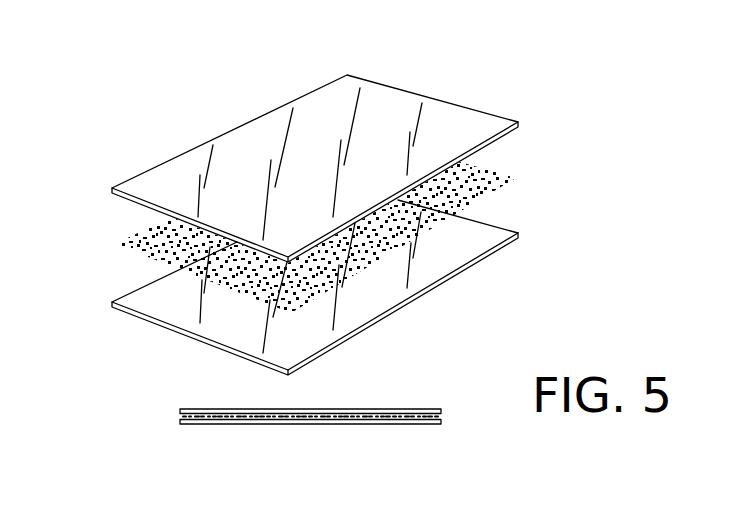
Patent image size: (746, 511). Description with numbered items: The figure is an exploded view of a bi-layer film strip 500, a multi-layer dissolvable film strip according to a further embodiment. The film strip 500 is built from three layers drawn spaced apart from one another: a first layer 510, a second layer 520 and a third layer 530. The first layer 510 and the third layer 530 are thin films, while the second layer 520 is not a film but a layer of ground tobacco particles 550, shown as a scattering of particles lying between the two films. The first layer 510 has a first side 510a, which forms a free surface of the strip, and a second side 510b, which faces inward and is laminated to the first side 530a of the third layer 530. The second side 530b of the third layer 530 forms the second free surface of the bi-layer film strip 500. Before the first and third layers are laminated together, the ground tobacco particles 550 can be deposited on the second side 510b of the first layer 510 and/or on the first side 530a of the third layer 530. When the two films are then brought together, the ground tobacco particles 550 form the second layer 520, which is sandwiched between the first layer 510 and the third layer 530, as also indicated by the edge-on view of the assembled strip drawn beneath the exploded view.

The bi-layer film strip 500 is at (364, 250).
The first layer 510 is at (268, 214).
The first side of first layer 510a is at (247, 138).
The second side of first layer 510b is at (140, 202).
The second layer 520 is at (108, 264).
The third layer 530 is at (366, 284).
The first side of third layer 530a is at (478, 237).
The second side of third layer 530b is at (457, 278).
The ground tobacco particles 550 is at (401, 200).